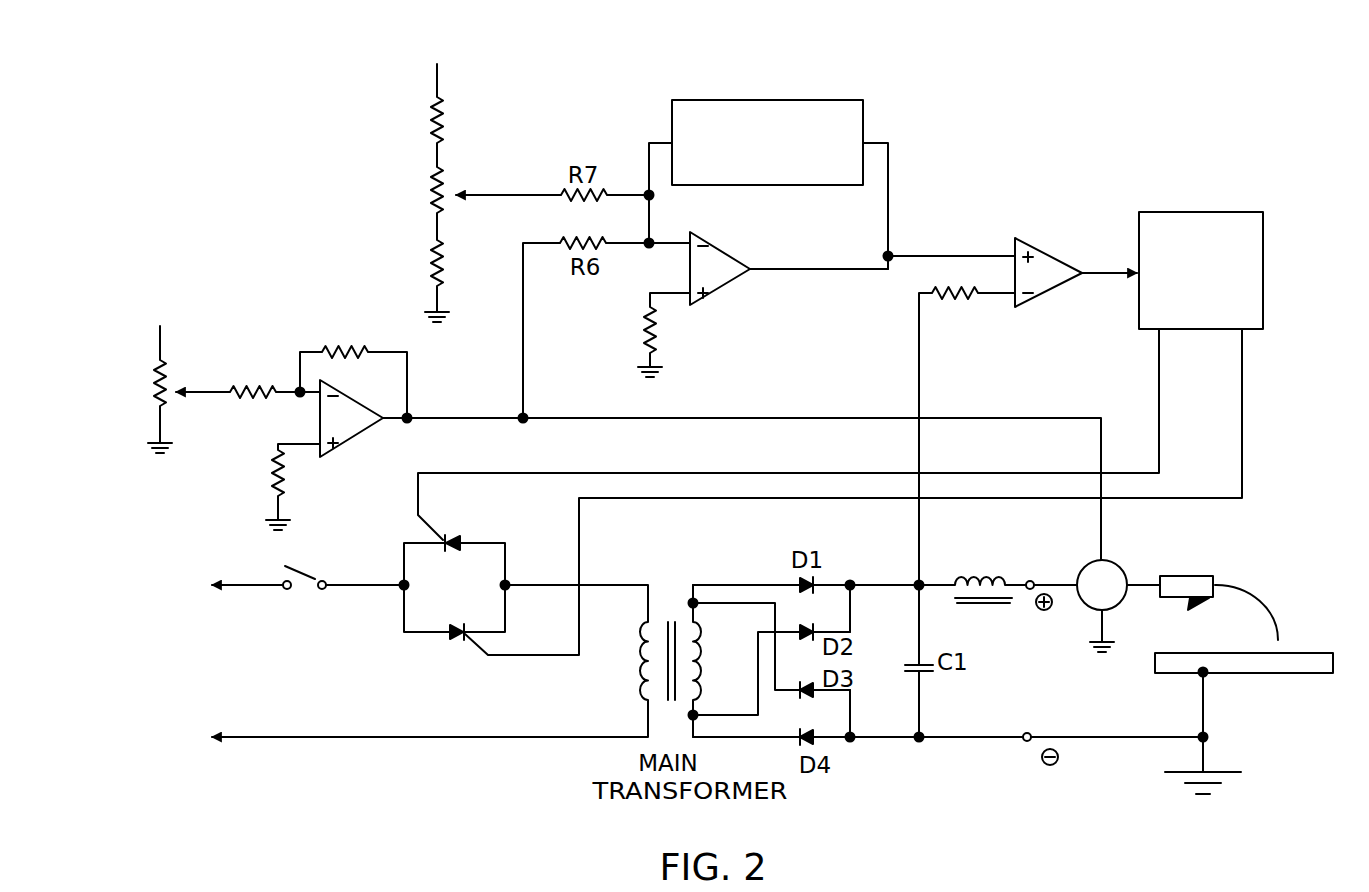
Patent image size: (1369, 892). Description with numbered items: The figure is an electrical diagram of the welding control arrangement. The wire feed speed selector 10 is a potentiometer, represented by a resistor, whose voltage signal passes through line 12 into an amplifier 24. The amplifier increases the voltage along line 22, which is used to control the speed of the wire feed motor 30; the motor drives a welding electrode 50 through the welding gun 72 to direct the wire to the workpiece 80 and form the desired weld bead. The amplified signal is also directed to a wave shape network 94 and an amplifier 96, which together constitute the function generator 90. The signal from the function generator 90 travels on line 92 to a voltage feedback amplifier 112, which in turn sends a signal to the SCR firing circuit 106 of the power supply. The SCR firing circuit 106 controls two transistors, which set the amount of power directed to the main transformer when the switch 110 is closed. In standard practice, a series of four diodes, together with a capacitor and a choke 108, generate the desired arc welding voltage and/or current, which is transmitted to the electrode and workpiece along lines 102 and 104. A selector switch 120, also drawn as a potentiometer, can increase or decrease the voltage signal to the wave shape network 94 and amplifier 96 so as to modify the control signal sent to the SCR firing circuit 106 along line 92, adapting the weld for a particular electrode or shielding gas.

The wire feed speed selector 10 is at (190, 351).
The line 12 is at (216, 398).
The line 22 is at (736, 418).
The amplifier 24 is at (358, 448).
The wire feed motor 30 is at (1118, 566).
The welding electrode 50 is at (1268, 598).
The welding gun 72 is at (1206, 576).
The workpiece 80 is at (1281, 674).
The function generator 90 is at (708, 91).
The line 92 is at (949, 256).
The wave shape network 94 is at (794, 100).
The amplifier 96 is at (732, 293).
The line 102 is at (1066, 588).
The line 104 is at (1116, 741).
The SCR firing circuit 106 is at (1217, 212).
The choke 108 is at (982, 576).
The switch 110 is at (305, 597).
The voltage feedback amplifier 112 is at (1044, 236).
The selector switch 120 is at (456, 140).